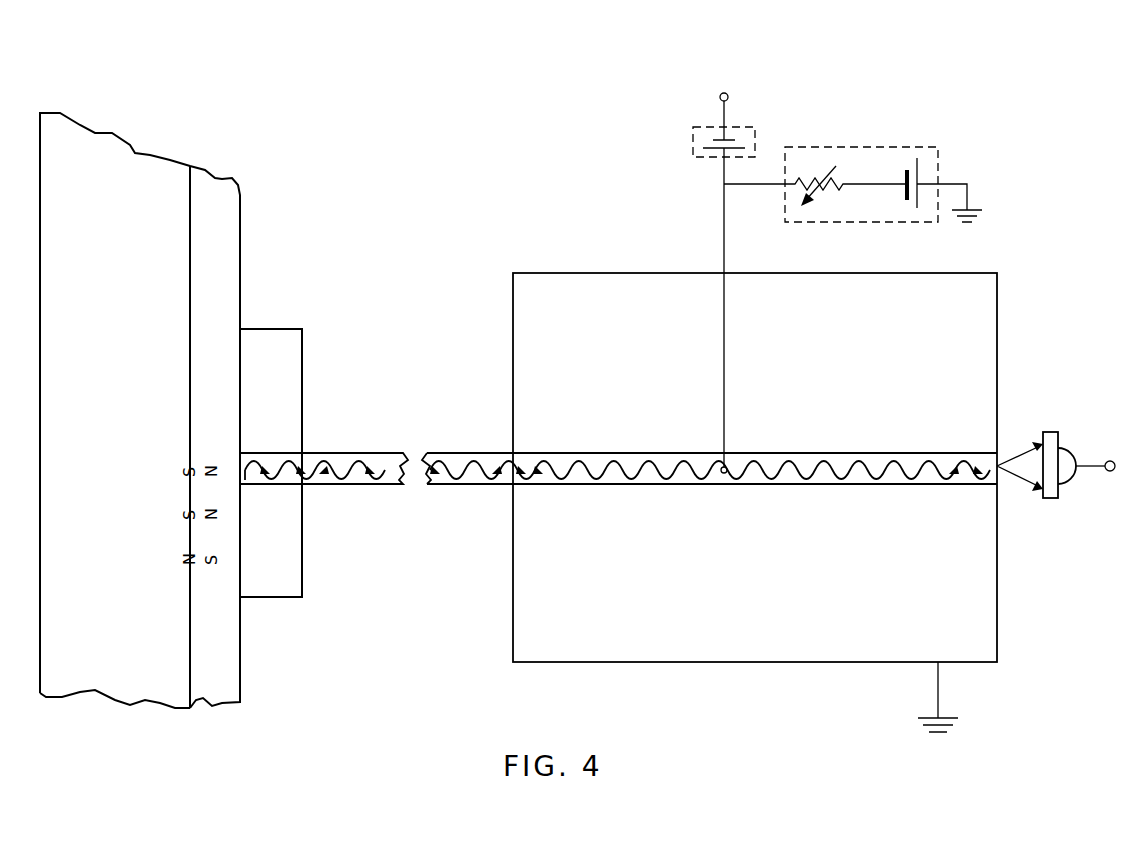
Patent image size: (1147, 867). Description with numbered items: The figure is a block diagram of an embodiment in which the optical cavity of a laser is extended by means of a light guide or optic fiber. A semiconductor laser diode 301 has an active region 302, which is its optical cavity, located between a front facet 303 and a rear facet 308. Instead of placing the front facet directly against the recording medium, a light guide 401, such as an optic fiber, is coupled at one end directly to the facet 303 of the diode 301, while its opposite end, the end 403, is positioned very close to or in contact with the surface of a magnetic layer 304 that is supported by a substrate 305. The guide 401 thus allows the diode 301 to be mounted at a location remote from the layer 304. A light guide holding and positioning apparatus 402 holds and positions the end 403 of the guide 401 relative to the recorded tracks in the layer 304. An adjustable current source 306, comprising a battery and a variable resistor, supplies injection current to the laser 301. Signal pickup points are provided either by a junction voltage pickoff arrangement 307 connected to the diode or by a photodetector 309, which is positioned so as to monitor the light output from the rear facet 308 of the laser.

The semiconductor laser diode 301 is at (997, 578).
The active region 302 is at (965, 480).
The front facet 303 is at (518, 462).
The magnetic layer 304 is at (224, 184).
The substrate 305 is at (122, 160).
The adjustable current source 306 is at (838, 148).
The junction voltage pickoff arrangement 307 is at (740, 126).
The rear facet 308 is at (1000, 452).
The photodetector 309 is at (1077, 458).
The light guide 401 is at (327, 453).
The light guide holding and positioning apparatus 402 is at (270, 337).
The end of the guide 403 is at (246, 468).